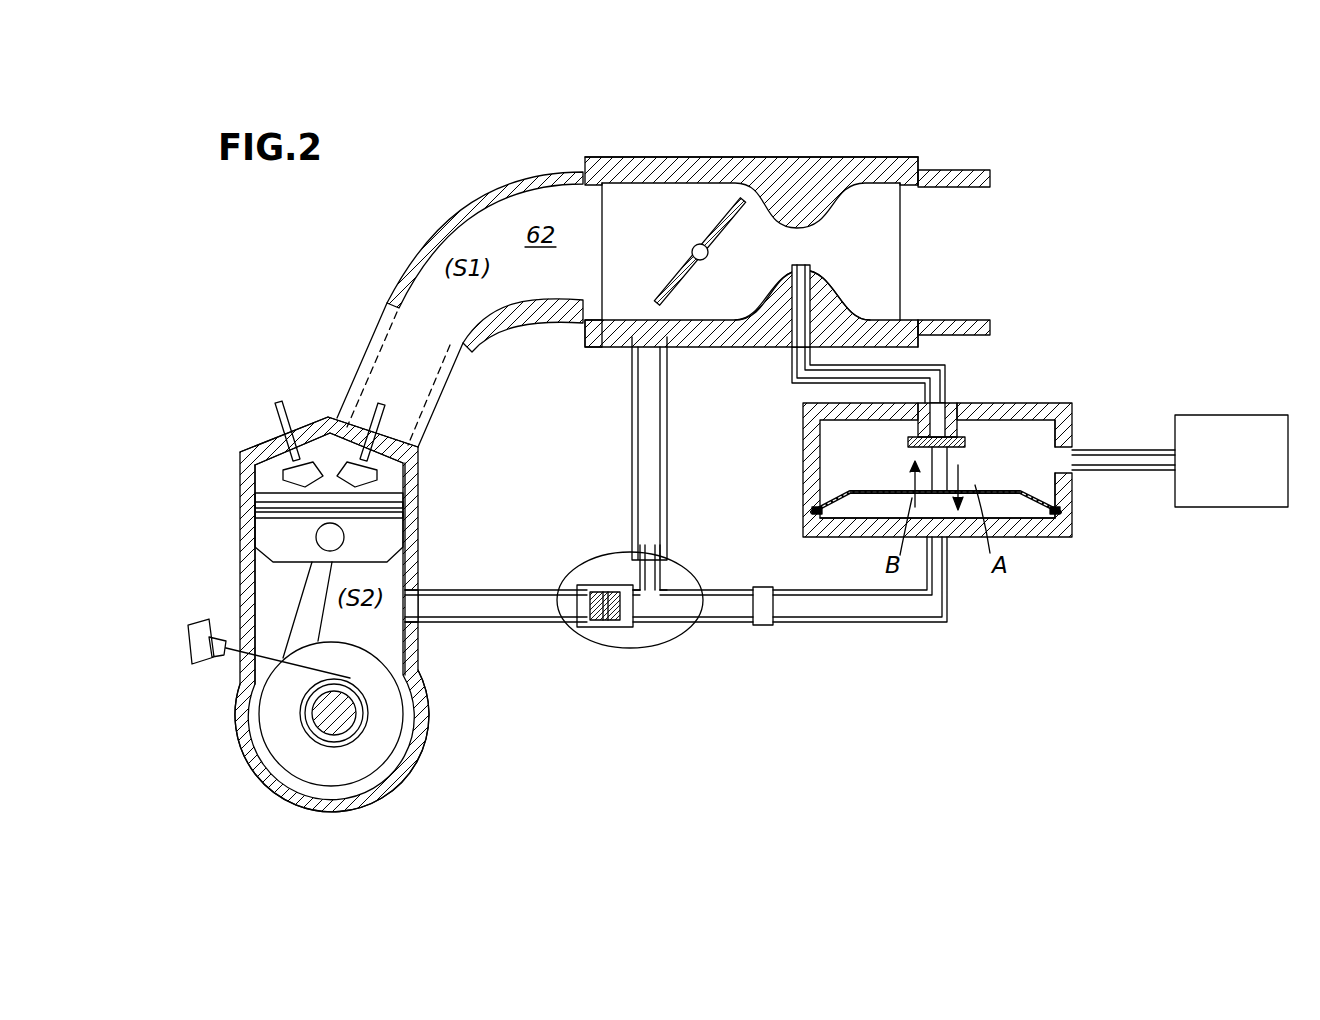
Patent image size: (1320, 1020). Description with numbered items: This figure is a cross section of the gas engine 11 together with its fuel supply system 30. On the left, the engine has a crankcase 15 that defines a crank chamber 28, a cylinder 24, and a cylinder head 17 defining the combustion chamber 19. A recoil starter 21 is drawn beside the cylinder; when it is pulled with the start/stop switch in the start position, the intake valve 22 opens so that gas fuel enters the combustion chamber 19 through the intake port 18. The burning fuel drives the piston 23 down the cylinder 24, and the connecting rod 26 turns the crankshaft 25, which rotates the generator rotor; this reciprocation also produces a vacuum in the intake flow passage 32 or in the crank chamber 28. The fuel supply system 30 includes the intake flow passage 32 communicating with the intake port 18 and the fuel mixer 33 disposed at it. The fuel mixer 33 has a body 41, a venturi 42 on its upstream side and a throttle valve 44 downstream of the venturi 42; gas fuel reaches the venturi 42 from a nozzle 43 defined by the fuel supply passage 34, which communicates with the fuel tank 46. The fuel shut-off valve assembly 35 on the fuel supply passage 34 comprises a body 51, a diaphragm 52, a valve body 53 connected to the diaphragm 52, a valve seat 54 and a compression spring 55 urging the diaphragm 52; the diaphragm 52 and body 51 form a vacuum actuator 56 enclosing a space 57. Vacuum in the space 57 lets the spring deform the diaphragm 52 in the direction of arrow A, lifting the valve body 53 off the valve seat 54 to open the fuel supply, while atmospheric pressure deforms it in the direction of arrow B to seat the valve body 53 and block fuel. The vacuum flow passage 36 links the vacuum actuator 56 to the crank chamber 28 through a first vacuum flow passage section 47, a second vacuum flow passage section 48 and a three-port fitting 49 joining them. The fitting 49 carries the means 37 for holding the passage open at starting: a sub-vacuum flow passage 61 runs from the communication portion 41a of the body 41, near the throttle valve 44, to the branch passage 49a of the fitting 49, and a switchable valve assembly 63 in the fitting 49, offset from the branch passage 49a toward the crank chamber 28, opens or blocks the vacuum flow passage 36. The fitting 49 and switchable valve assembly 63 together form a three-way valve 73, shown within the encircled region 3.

The detail region shown in FIG. 3 is at (615, 655).
The gas engine 11 is at (238, 515).
The crankcase 15 is at (238, 667).
The cylinder head 17 is at (272, 448).
The intake port 18 is at (355, 433).
The combustion chamber 19 is at (322, 453).
The recoil starter 21 is at (203, 625).
The intake valve 22 is at (415, 478).
The piston 23 is at (290, 527).
The cylinder 24 is at (262, 573).
The crankshaft 25 is at (312, 745).
The connecting rod 26 is at (323, 580).
The crank chamber 28 is at (365, 637).
The fuel supply system 30 is at (1022, 308).
The intake flow passage 32 is at (455, 222).
The fuel mixer 33 is at (675, 152).
The fuel supply passage 34 is at (792, 372).
The fuel shut-off valve assembly 35 is at (1075, 400).
The vacuum flow passage 36 is at (790, 630).
The means for holding the vacuum flow passage open 37 is at (593, 463).
The body 41 is at (800, 160).
The communication portion 41a is at (602, 347).
The venturi 42 is at (775, 286).
The nozzle 43 is at (812, 270).
The throttle valve 44 is at (667, 290).
The fuel tank 46 is at (1225, 425).
The first vacuum flow passage section 47 is at (870, 625).
The second vacuum flow passage section 48 is at (507, 622).
The fitting 49 is at (680, 625).
The branch passage 49a is at (662, 568).
The body 51 is at (1015, 405).
The diaphragm 52 is at (850, 492).
The valve body 53 is at (960, 452).
The valve seat 54 is at (952, 410).
The compression spring 55 is at (908, 440).
The vacuum actuator 56 is at (818, 486).
The space 57 is at (873, 500).
The sub-vacuum flow passage 61 is at (632, 440).
The switchable valve assembly 63 is at (618, 555).
The three-way valve 73 is at (650, 628).